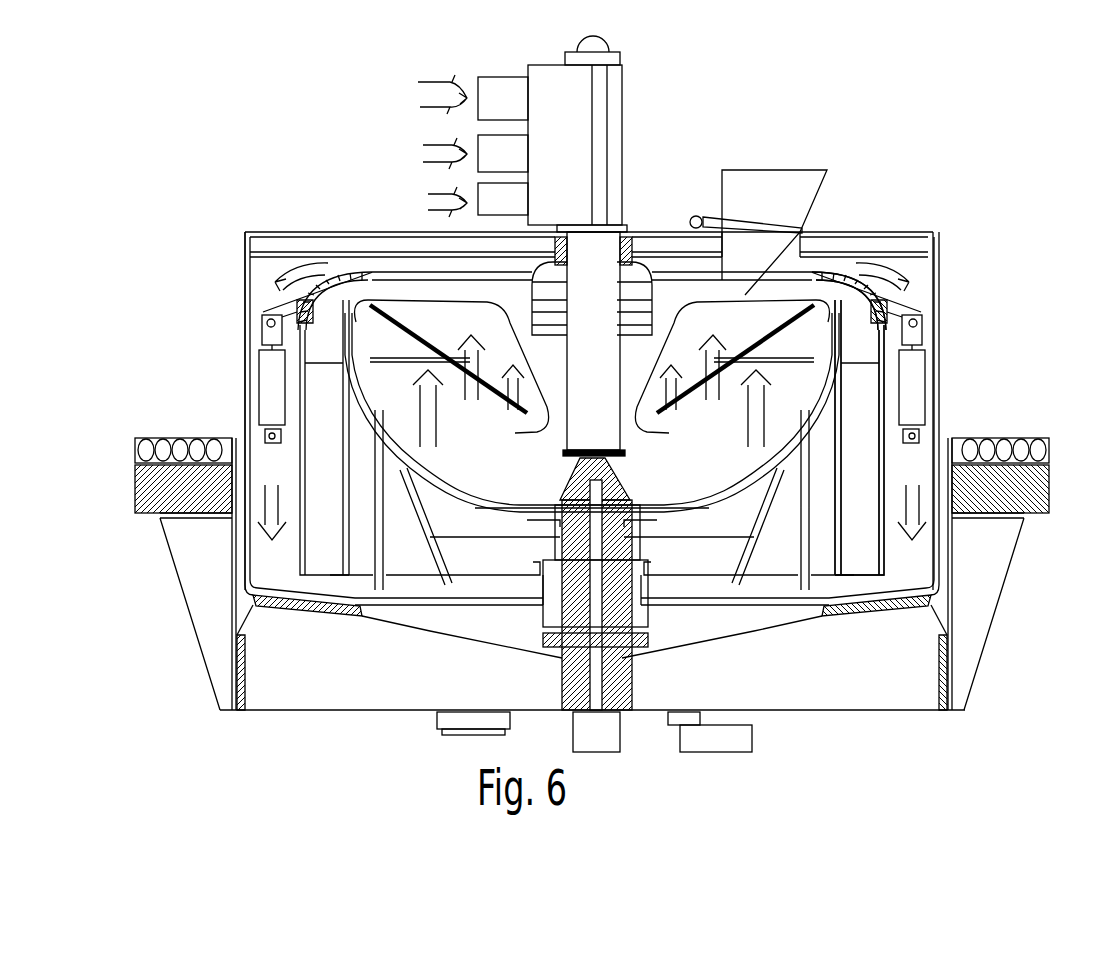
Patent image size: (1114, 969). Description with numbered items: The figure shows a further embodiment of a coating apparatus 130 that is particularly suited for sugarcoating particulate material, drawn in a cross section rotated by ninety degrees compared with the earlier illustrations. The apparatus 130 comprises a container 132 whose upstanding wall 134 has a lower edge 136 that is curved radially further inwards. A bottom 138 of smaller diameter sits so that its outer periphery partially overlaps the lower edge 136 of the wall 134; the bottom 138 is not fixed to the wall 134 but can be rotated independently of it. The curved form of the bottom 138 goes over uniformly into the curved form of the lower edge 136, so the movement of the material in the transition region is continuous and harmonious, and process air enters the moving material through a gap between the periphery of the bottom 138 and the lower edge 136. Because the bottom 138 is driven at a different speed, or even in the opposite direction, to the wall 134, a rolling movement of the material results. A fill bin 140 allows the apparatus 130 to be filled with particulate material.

The apparatus 130 is at (896, 189).
The container 132 is at (791, 561).
The upstanding wall 134 is at (840, 385).
The lower edge 136 is at (728, 513).
The bottom 138 is at (490, 515).
The fill bin 140 is at (743, 190).